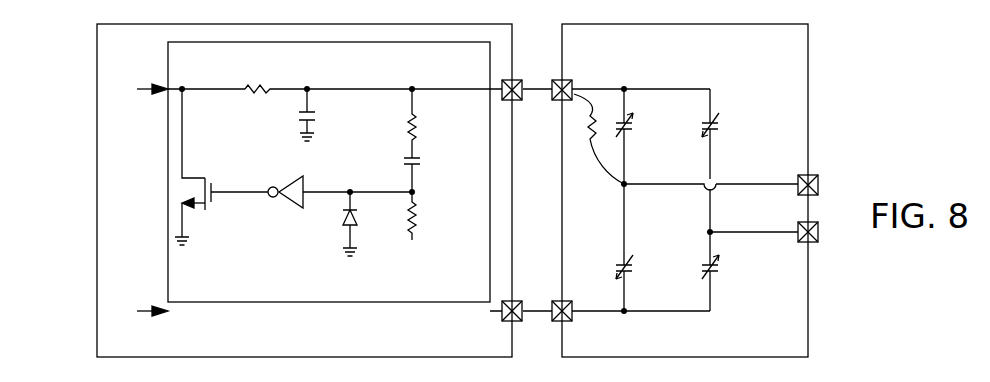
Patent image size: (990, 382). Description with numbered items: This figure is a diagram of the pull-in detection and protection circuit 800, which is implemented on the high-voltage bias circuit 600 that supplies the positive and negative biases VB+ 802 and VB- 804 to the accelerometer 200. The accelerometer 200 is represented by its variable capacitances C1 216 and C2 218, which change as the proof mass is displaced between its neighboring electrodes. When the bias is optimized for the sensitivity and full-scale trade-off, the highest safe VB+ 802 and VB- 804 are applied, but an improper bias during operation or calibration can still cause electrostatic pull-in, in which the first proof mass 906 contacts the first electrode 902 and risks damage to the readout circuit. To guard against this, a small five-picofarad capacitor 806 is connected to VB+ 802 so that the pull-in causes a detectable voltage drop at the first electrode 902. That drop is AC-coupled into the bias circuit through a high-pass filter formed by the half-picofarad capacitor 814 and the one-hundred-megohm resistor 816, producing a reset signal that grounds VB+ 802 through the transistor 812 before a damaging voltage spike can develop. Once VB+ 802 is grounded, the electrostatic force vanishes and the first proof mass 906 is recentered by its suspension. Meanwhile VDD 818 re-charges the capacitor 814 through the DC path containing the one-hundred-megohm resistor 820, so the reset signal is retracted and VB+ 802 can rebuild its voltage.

The high-voltage bias circuit 600 is at (97, 188).
The pull-in detection and protection circuit 800 is at (168, 52).
The VB+ 802 is at (130, 87).
The VB- 804 is at (131, 340).
The 5 pF capacitor 806 is at (312, 110).
The transistor 812 is at (212, 200).
The 0.5 pF capacitor 814 is at (418, 155).
The 100 MΩ resistor 816 is at (414, 130).
The VDD 818 is at (434, 258).
The 100 MΩ resistor 820 is at (412, 215).
The first electrode 902 is at (559, 79).
The first proof mass 906 is at (820, 182).
The accelerometer 200 is at (808, 43).
The C1 216 is at (615, 117).
The C2 218 is at (715, 118).